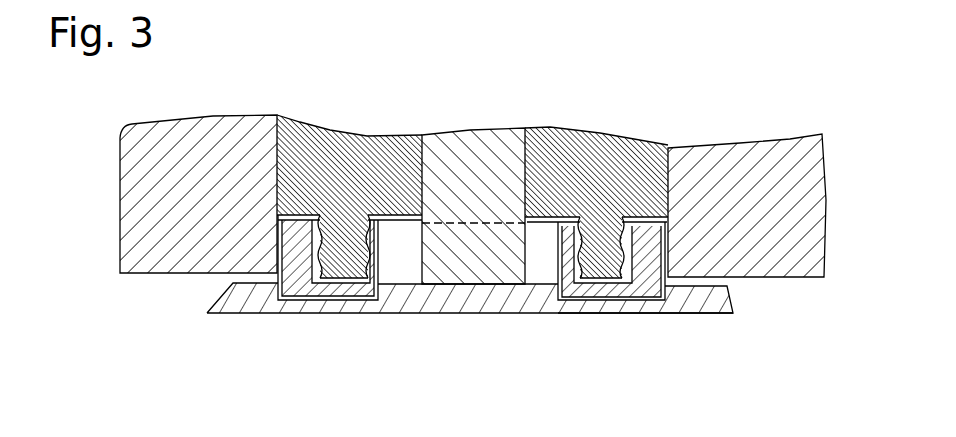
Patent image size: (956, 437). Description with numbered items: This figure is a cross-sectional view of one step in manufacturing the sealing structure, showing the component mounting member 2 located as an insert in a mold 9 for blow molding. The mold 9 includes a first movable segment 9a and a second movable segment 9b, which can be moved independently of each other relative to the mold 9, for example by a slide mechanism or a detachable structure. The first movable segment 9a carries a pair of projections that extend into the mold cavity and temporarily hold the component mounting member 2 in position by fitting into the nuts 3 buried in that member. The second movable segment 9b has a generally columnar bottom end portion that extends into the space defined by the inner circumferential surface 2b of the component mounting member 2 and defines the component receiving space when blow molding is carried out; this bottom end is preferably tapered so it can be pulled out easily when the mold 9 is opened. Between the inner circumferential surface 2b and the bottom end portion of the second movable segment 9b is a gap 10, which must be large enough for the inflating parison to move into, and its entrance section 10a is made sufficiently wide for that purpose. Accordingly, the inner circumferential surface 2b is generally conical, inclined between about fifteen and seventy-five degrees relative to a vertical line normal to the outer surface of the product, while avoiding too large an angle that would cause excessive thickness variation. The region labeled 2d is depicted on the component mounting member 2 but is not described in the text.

The component mounting member 2 is at (678, 320).
The inner circumferential surface 2b is at (544, 268).
The first recess 2d is at (398, 224).
The nuts 3 is at (637, 310).
The mold 9 is at (733, 167).
The first movable segment 9a is at (603, 142).
The second movable segment 9b is at (475, 143).
The gap 10 is at (408, 238).
The entrance section 10a is at (462, 298).